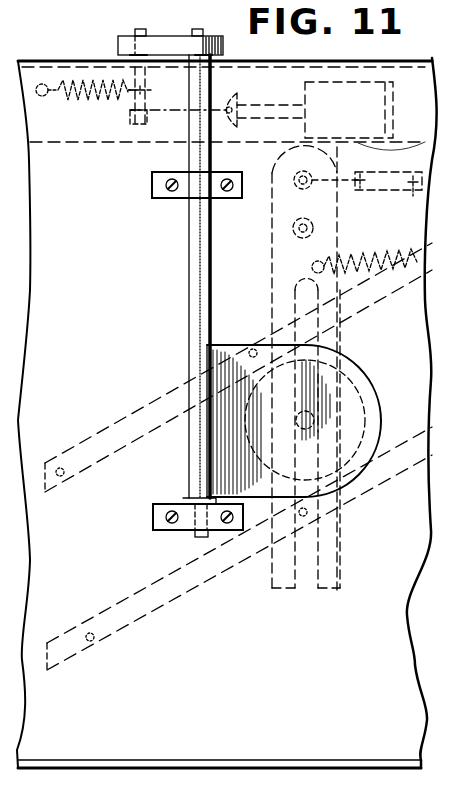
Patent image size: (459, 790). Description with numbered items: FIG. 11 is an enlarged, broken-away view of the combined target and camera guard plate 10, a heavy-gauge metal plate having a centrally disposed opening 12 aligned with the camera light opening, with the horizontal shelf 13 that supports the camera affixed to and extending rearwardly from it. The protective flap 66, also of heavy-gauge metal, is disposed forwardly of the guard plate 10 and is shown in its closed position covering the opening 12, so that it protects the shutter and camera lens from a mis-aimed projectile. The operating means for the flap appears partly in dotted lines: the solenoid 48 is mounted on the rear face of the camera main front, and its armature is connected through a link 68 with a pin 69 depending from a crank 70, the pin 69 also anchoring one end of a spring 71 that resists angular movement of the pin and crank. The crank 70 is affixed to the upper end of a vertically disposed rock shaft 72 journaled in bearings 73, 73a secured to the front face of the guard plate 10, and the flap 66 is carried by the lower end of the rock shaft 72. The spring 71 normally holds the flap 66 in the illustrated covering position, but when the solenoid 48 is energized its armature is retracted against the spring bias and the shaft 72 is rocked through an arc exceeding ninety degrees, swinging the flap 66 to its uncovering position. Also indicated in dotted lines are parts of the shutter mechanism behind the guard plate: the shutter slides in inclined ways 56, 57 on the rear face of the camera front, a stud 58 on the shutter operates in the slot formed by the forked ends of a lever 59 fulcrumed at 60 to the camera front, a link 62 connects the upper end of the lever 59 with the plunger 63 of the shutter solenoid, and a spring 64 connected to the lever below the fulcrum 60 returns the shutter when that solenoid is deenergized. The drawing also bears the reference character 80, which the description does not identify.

The guard plate 10 is at (101, 296).
The opening 12 is at (357, 452).
The horizontal shelf 13 is at (218, 760).
The solenoid 48 is at (374, 100).
The inclined way 56 is at (90, 451).
The inclined way 57 is at (135, 614).
The stud 58 is at (304, 423).
The lever 59 is at (300, 278).
The fulcrum 60 is at (292, 230).
The link 62 is at (336, 173).
The plunger 63 is at (394, 200).
The spring 64 is at (372, 256).
The protective flap 66 is at (360, 443).
The link 68 is at (188, 171).
The pin 69 is at (134, 127).
The crank 70 is at (129, 52).
The spring 71 is at (86, 99).
The rock shaft 72 is at (201, 282).
The bearing 73 is at (161, 198).
The bearing 73a is at (153, 517).
The top rail 80 is at (50, 68).